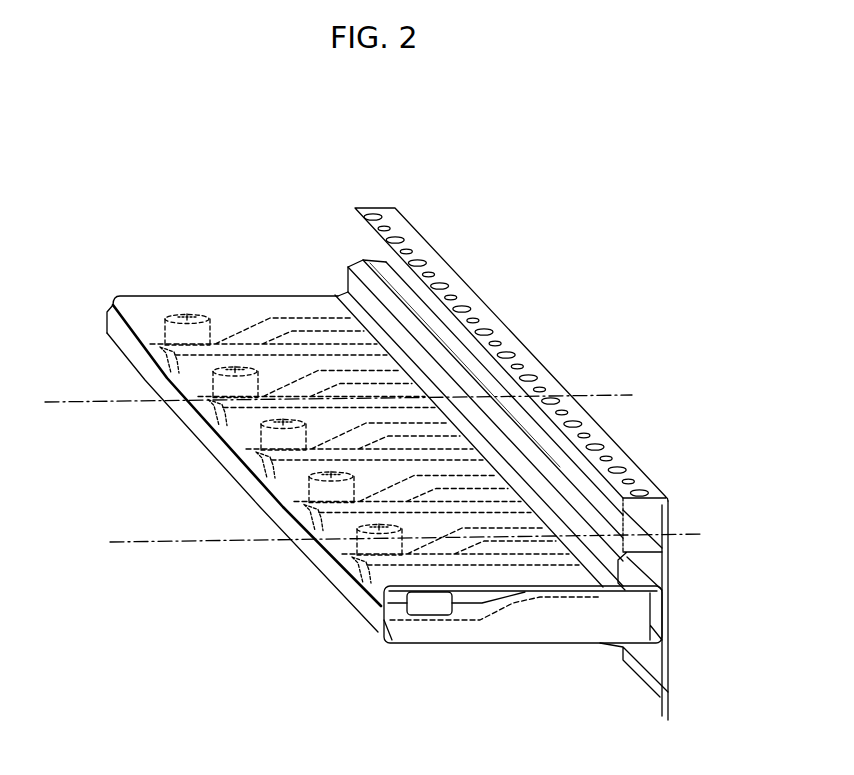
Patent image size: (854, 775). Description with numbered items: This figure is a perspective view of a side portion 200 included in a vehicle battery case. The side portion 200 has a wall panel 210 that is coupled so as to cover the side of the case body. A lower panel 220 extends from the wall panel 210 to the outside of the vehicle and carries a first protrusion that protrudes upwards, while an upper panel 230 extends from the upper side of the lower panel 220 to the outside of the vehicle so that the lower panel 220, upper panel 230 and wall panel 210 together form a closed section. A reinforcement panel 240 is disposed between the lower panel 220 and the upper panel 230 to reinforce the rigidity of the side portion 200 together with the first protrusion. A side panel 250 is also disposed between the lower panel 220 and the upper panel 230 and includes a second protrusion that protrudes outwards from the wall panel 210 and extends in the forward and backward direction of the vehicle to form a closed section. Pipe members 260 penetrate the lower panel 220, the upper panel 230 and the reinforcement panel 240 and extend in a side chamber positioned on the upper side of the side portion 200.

The side portion 200 is at (376, 198).
The wall panel 210 is at (483, 312).
The lower panel 220 is at (362, 600).
The upper panel 230 is at (245, 308).
The reinforcement panel 240 is at (308, 353).
The side panel 250 is at (665, 555).
The pipe member 260 is at (185, 318).